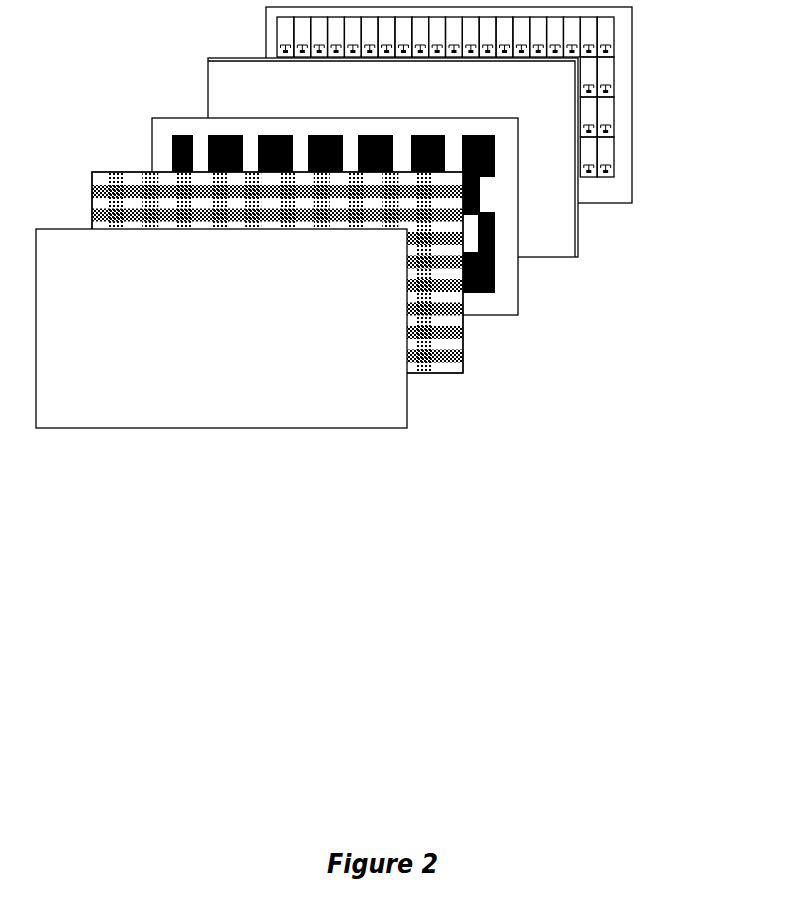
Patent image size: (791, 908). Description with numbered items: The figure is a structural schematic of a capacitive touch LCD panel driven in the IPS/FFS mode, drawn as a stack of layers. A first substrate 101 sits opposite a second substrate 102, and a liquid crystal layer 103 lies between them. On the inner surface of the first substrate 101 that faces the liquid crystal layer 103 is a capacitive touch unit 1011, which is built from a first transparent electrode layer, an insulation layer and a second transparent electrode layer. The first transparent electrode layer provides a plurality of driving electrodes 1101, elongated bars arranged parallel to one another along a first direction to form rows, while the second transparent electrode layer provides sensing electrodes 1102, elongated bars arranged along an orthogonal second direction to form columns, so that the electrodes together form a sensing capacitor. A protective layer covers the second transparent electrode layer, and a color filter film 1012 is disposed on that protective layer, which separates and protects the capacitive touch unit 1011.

The first substrate 101 is at (256, 330).
The capacitive touch unit 1011 is at (290, 217).
The color filter film 1012 is at (371, 226).
The second substrate 102 is at (487, 105).
The liquid crystal layer 103 is at (435, 157).
The driving electrodes 1101 is at (112, 182).
The sensing electrodes 1102 is at (165, 187).